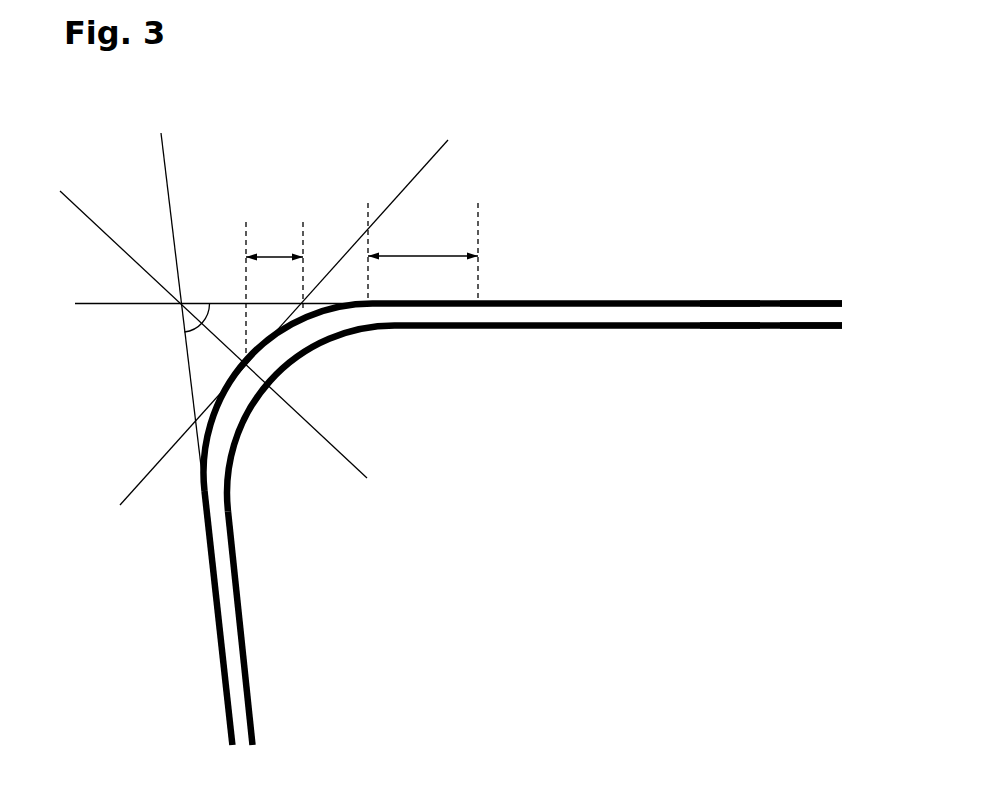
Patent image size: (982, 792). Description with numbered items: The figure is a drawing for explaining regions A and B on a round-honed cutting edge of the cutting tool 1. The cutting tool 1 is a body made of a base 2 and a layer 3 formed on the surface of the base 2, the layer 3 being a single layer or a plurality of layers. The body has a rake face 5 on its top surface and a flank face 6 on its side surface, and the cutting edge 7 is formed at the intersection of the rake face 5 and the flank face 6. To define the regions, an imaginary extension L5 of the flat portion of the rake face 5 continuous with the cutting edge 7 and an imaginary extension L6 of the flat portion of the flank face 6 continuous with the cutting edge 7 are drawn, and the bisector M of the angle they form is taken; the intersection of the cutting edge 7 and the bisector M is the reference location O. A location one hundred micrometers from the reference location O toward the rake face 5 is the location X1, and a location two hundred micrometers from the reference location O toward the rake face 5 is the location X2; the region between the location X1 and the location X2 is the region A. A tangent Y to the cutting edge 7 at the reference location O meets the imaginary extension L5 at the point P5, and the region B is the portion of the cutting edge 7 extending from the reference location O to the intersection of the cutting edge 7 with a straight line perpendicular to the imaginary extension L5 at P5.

The cutting tool 1 is at (492, 415).
The base 2 is at (787, 350).
The layer 3 is at (728, 315).
The rake face 5 is at (621, 302).
The flank face 6 is at (207, 563).
The cutting edge 7 is at (268, 341).
The imaginary extension of the flat portion of the rake face L5 is at (205, 305).
The imaginary extension of the flat portion of the flank face L6 is at (175, 295).
The bisector M is at (198, 319).
The reference location O is at (245, 364).
The intersection of tangent Y and imaginary extension L5 P5 is at (303, 303).
The tangent to the cutting edge Y is at (296, 307).
The location X1 is at (371, 239).
The location X2 is at (482, 239).
The region A is at (423, 237).
The region B is at (274, 283).